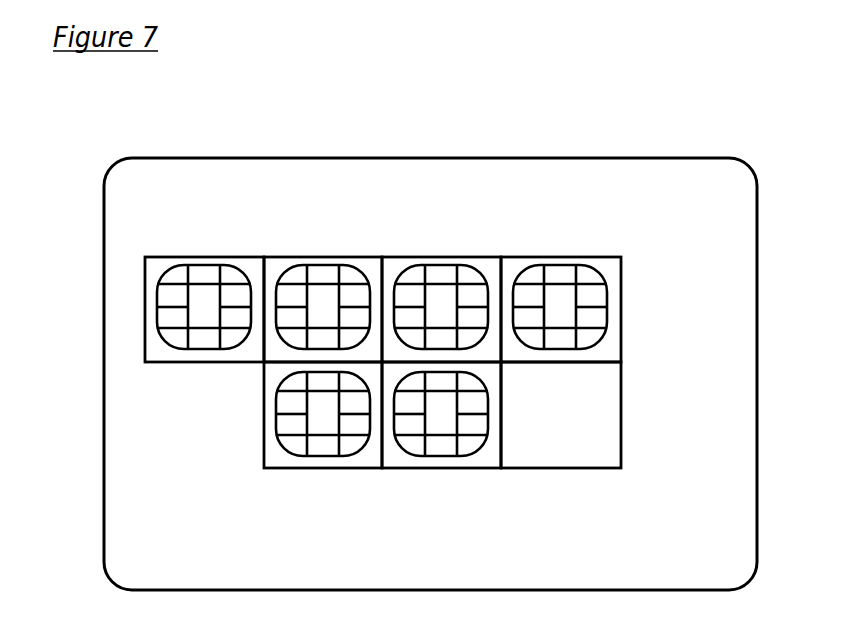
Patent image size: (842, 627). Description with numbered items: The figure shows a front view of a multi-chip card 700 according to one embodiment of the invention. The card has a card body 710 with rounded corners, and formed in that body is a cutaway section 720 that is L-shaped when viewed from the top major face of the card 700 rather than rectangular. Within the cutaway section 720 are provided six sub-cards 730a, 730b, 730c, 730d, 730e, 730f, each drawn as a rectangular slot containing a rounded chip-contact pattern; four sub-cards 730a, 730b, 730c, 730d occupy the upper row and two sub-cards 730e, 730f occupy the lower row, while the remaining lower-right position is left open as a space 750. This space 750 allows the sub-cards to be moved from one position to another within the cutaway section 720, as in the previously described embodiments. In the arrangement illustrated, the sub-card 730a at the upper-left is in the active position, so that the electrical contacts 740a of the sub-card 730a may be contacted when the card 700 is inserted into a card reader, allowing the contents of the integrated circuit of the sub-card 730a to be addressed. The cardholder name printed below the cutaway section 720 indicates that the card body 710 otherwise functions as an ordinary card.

The multi-chip card 700 is at (341, 133).
The card body 710 is at (548, 157).
The cutaway section 720 is at (622, 397).
The sub-card 730a is at (216, 278).
The sub-card 730b is at (324, 255).
The sub-card 730c is at (442, 255).
The sub-card 730d is at (562, 255).
The sub-card 730e is at (327, 470).
The sub-card 730f is at (443, 470).
The electrical contacts 740a is at (205, 310).
The space 750 is at (560, 438).